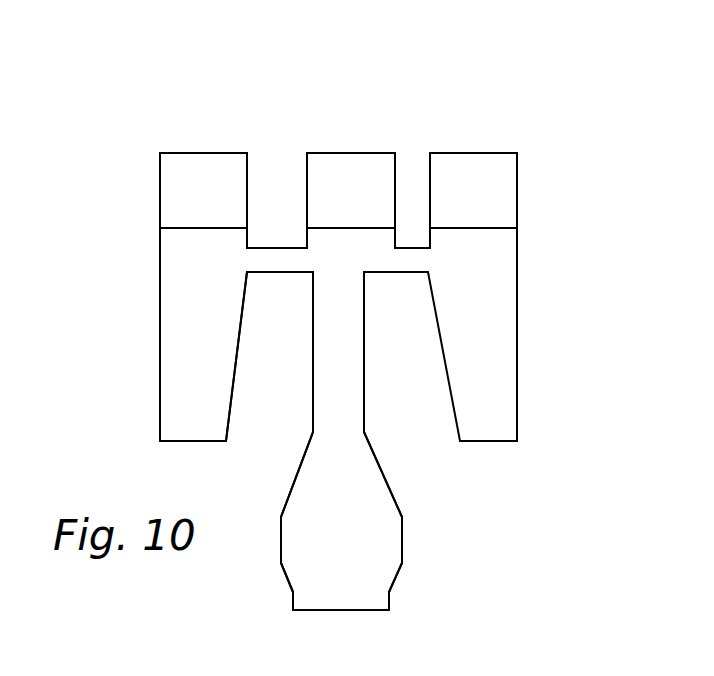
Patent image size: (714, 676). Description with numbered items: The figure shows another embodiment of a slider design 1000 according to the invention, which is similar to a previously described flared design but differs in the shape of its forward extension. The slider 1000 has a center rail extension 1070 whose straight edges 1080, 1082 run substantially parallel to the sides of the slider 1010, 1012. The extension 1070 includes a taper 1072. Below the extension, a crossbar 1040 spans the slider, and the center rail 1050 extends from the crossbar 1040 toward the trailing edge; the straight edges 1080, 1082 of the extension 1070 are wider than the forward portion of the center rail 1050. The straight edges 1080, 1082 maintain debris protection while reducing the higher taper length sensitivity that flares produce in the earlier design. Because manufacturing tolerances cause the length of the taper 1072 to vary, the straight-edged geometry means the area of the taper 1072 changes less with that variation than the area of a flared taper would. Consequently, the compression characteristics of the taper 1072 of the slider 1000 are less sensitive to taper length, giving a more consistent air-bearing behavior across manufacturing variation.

The slider design 1000 is at (198, 100).
The side of the slider 1010 is at (128, 255).
The side of the slider 1012 is at (533, 250).
The crossbar 1040 is at (284, 263).
The center rail 1050 is at (312, 366).
The center rail extension 1070 is at (322, 130).
The taper 1072 is at (355, 161).
The straight edge 1080 is at (306, 173).
The straight edge 1082 is at (397, 170).